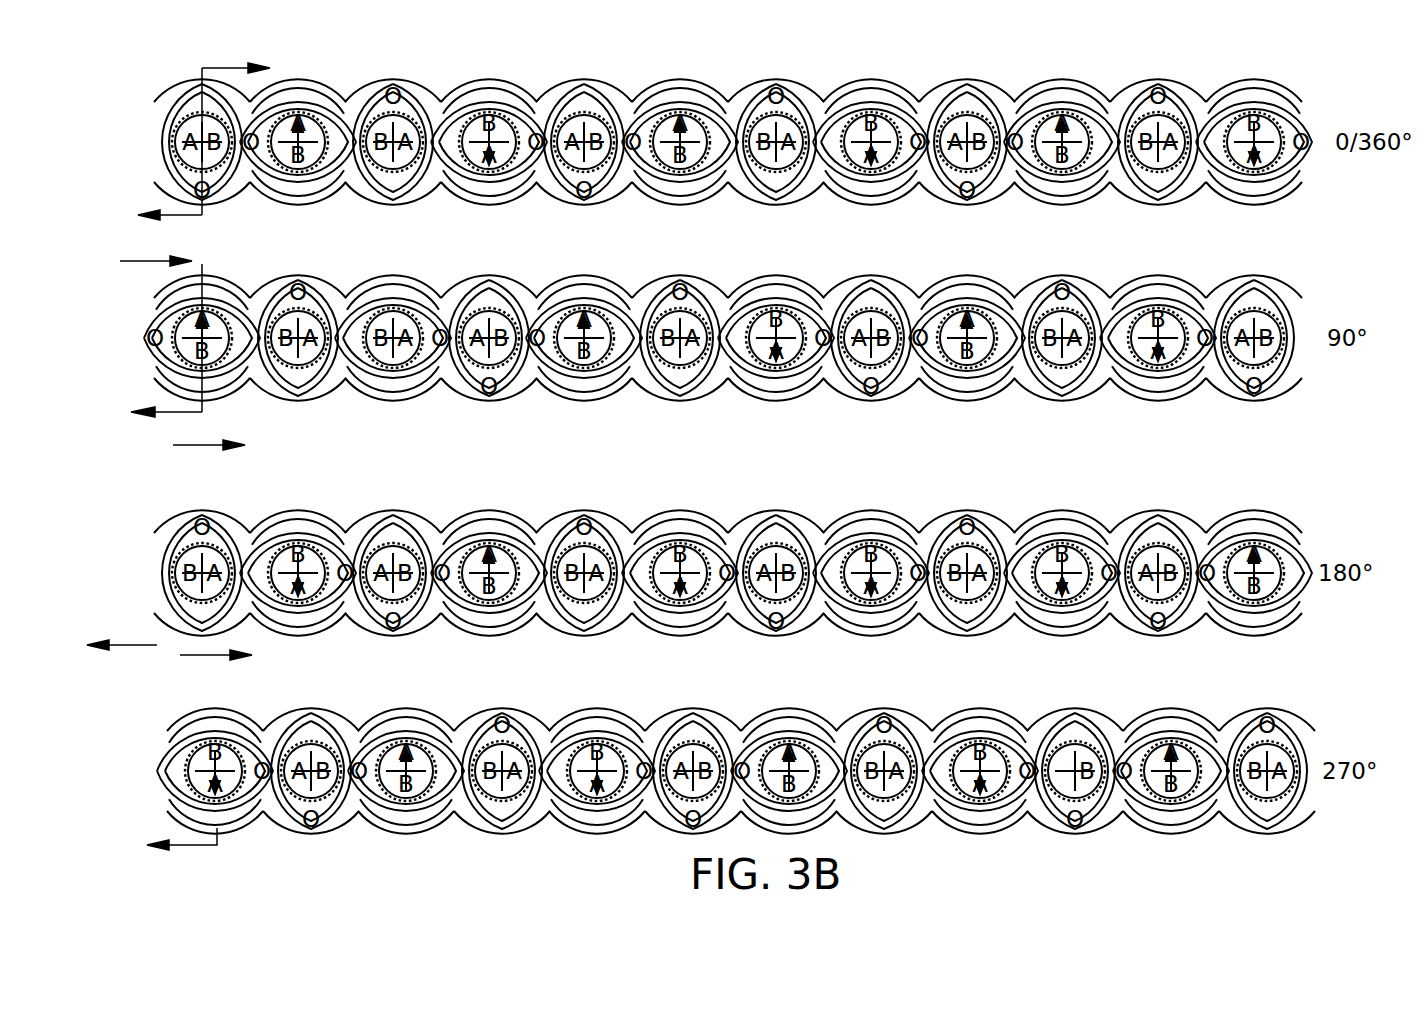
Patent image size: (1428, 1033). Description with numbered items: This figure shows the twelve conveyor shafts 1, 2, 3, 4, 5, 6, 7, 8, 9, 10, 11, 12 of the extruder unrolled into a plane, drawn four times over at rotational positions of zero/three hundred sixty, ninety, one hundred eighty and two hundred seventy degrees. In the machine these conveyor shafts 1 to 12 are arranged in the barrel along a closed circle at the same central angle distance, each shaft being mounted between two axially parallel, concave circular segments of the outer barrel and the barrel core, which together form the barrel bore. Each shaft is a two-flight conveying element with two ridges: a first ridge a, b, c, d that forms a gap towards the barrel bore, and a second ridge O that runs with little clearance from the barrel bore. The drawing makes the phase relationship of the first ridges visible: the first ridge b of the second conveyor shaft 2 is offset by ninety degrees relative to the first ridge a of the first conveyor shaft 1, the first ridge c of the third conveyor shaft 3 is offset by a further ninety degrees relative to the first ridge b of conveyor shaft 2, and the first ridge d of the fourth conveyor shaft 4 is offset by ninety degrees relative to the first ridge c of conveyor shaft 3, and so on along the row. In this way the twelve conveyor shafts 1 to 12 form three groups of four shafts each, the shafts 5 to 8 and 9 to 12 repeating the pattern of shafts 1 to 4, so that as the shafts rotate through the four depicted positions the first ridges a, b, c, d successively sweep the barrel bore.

The conveyor shaft 1 is at (208, 417).
The conveyor shaft 2 is at (299, 417).
The conveyor shaft 3 is at (399, 417).
The conveyor shaft 4 is at (490, 417).
The conveyor shaft 5 is at (590, 417).
The conveyor shaft 6 is at (681, 417).
The conveyor shaft 7 is at (782, 417).
The conveyor shaft 8 is at (872, 417).
The conveyor shaft 9 is at (973, 417).
The conveyor shaft 10 is at (1063, 417).
The conveyor shaft 11 is at (1164, 417).
The conveyor shaft 12 is at (1255, 417).
The first ridge a is at (202, 92).
The first ridge b is at (338, 127).
The first ridge c is at (392, 182).
The first ridge d is at (447, 137).